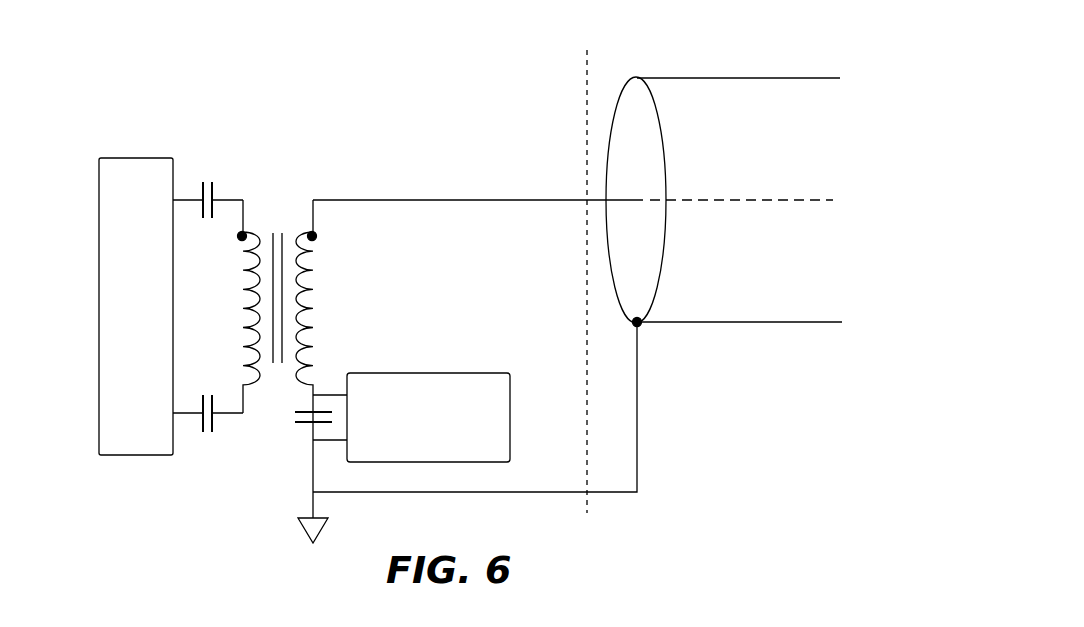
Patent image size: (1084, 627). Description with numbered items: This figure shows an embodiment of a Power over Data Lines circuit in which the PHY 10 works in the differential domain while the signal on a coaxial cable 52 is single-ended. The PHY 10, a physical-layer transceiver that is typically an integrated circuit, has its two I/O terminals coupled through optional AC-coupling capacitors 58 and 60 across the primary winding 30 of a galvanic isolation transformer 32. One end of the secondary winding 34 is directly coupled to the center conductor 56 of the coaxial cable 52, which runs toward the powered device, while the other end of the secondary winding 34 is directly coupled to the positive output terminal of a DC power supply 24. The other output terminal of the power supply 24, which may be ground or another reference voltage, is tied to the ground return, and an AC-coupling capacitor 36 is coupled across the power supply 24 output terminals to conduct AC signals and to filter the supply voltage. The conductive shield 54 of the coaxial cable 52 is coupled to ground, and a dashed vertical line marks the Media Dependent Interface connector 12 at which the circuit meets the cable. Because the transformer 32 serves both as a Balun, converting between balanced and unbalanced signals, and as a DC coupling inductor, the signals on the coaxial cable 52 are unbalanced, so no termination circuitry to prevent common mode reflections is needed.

The PHY 10 is at (99, 266).
The Media Dependent Interface (MDI) connector 12 is at (585, 68).
The DC power supply 24 is at (440, 373).
The primary winding 30 is at (247, 314).
The galvanic isolation transformer 32 is at (277, 408).
The secondary winding 34 is at (313, 315).
The AC-coupling capacitor 36 is at (306, 424).
The coaxial cable 52 is at (762, 68).
The conductive shield 54 is at (806, 322).
The center conductor 56 is at (737, 196).
The AC-coupling capacitor 58 is at (203, 190).
The AC-coupling capacitor 60 is at (202, 422).